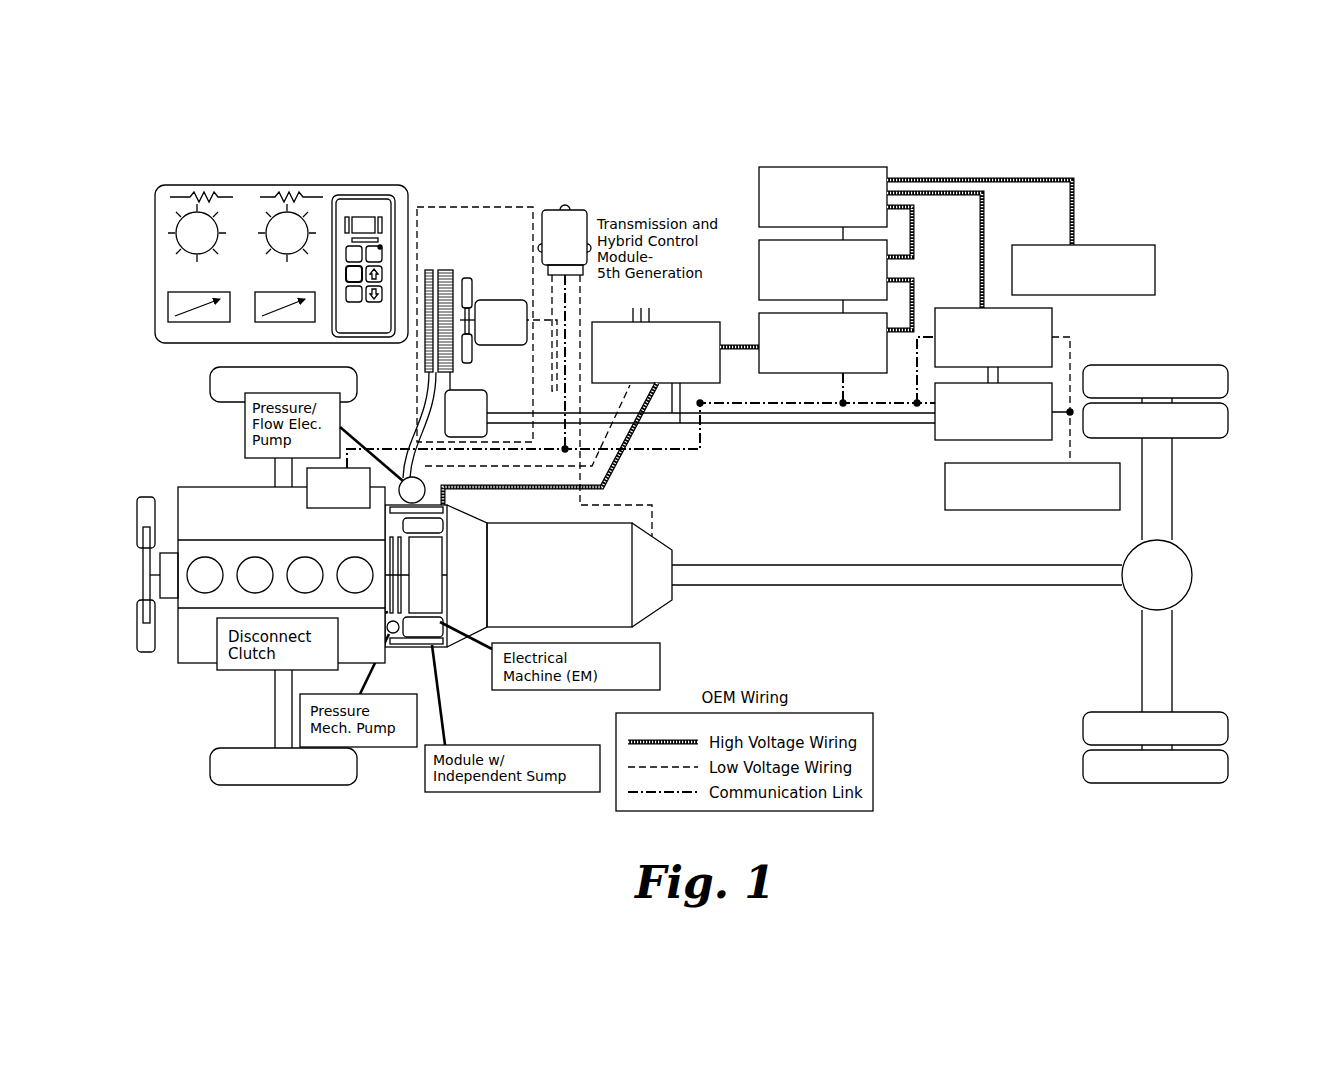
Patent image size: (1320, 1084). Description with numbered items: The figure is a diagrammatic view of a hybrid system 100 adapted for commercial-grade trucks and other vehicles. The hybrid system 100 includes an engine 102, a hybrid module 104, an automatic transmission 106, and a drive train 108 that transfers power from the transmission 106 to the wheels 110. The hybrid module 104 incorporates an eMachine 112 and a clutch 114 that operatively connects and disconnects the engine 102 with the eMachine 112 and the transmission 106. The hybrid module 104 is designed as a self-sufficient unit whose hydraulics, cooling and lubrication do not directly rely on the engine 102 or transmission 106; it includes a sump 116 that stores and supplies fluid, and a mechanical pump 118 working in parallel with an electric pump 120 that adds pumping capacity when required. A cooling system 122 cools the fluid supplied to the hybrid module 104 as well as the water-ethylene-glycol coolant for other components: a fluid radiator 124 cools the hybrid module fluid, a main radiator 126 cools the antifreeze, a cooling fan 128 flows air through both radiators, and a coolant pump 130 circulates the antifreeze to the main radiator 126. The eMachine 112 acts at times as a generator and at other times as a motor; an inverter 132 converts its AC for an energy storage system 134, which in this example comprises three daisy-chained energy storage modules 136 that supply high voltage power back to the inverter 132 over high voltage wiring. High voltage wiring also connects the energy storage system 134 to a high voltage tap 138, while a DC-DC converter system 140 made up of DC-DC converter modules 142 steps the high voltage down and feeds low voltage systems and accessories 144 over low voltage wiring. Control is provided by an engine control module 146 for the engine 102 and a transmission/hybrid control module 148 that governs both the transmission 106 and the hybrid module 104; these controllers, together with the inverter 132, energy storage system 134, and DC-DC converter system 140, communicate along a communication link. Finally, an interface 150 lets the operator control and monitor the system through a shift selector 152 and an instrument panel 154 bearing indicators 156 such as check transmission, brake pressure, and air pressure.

The hybrid system 100 is at (1114, 176).
The engine 102 is at (178, 487).
The hybrid module 104 is at (410, 635).
The automatic transmission 106 is at (668, 545).
The drive train 108 is at (917, 585).
The wheels 110 is at (1200, 365).
The eMachine 112 is at (450, 632).
The clutch 114 is at (389, 560).
The sump 116 is at (424, 652).
The mechanical pump 118 is at (388, 633).
The electric pump 120 is at (409, 477).
The cooling system 122 is at (425, 207).
The fluid radiator 124 is at (425, 340).
The main radiator 126 is at (448, 272).
The cooling fan 128 is at (512, 300).
The coolant pump 130 is at (467, 388).
The inverter 132 is at (680, 322).
The energy storage system 134 is at (823, 253).
The energy storage module 136 is at (858, 167).
The high voltage tap 138 is at (1155, 258).
The DC-DC converter system 140 is at (1007, 352).
The DC-DC converter module 142 is at (965, 308).
The systems and accessories 144 is at (1037, 510).
The engine control module (ECM) 146 is at (292, 483).
The transmission/hybrid control module (TCM/HCM) 148 is at (550, 208).
The interface 150 is at (275, 150).
The shift selector 152 is at (357, 194).
The instrument panel 154 is at (170, 214).
The indicators 156 is at (185, 252).